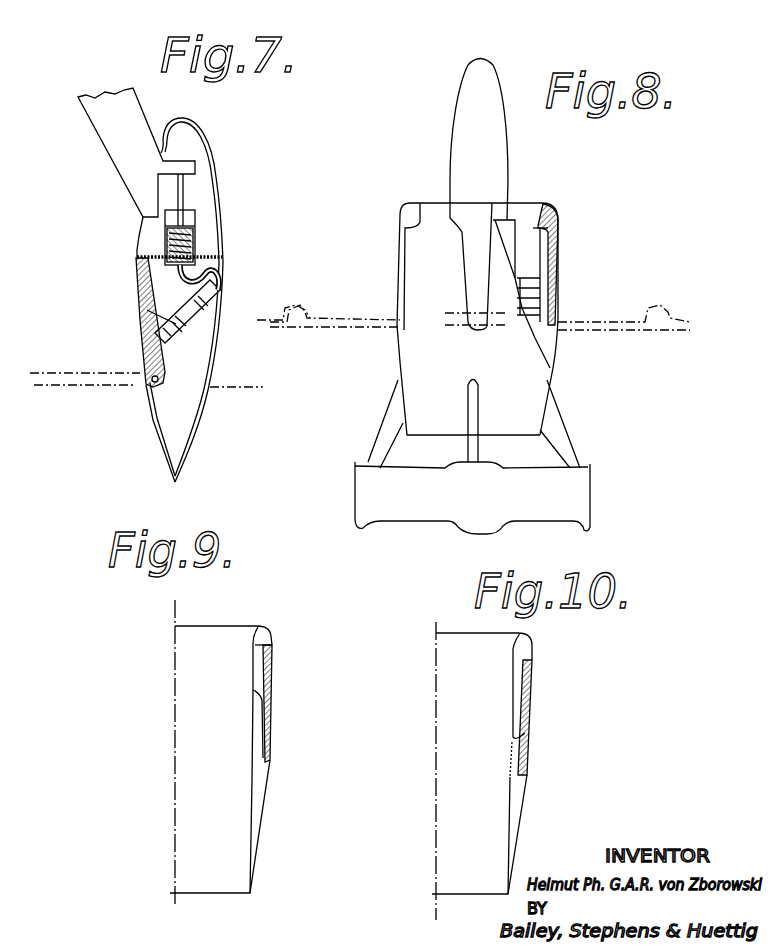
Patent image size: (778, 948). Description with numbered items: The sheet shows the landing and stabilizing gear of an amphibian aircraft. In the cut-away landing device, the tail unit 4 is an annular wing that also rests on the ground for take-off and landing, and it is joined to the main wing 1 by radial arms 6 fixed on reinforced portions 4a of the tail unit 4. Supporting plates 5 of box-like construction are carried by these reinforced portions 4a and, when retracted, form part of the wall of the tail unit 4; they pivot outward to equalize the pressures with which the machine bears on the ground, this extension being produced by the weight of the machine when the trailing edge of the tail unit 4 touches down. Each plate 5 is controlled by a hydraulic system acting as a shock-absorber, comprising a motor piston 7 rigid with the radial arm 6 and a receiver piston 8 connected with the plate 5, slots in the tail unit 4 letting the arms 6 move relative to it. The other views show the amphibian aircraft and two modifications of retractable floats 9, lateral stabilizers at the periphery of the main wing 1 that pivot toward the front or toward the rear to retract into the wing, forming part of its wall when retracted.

In FIG. 8, the main wing 1 is at (408, 267).
In FIG. 9, the main wing 1 is at (257, 803).
In FIG. 10, the main wing 1 is at (518, 793).
In FIG. 8, the tail unit 4 is at (468, 512).
In FIG. 7, the reinforced portions of the tail unit 4a is at (204, 136).
In FIG. 7, the supporting plates 5 is at (142, 327).
In FIG. 7, the radial arms 6 is at (125, 115).
In FIG. 7, the motor piston 7 is at (194, 227).
In FIG. 7, the receiver piston 8 is at (217, 292).
In FIG. 8, the floats 9 is at (407, 222).
In FIG. 9, the floats 9 is at (267, 768).
In FIG. 10, the floats 9 is at (530, 658).